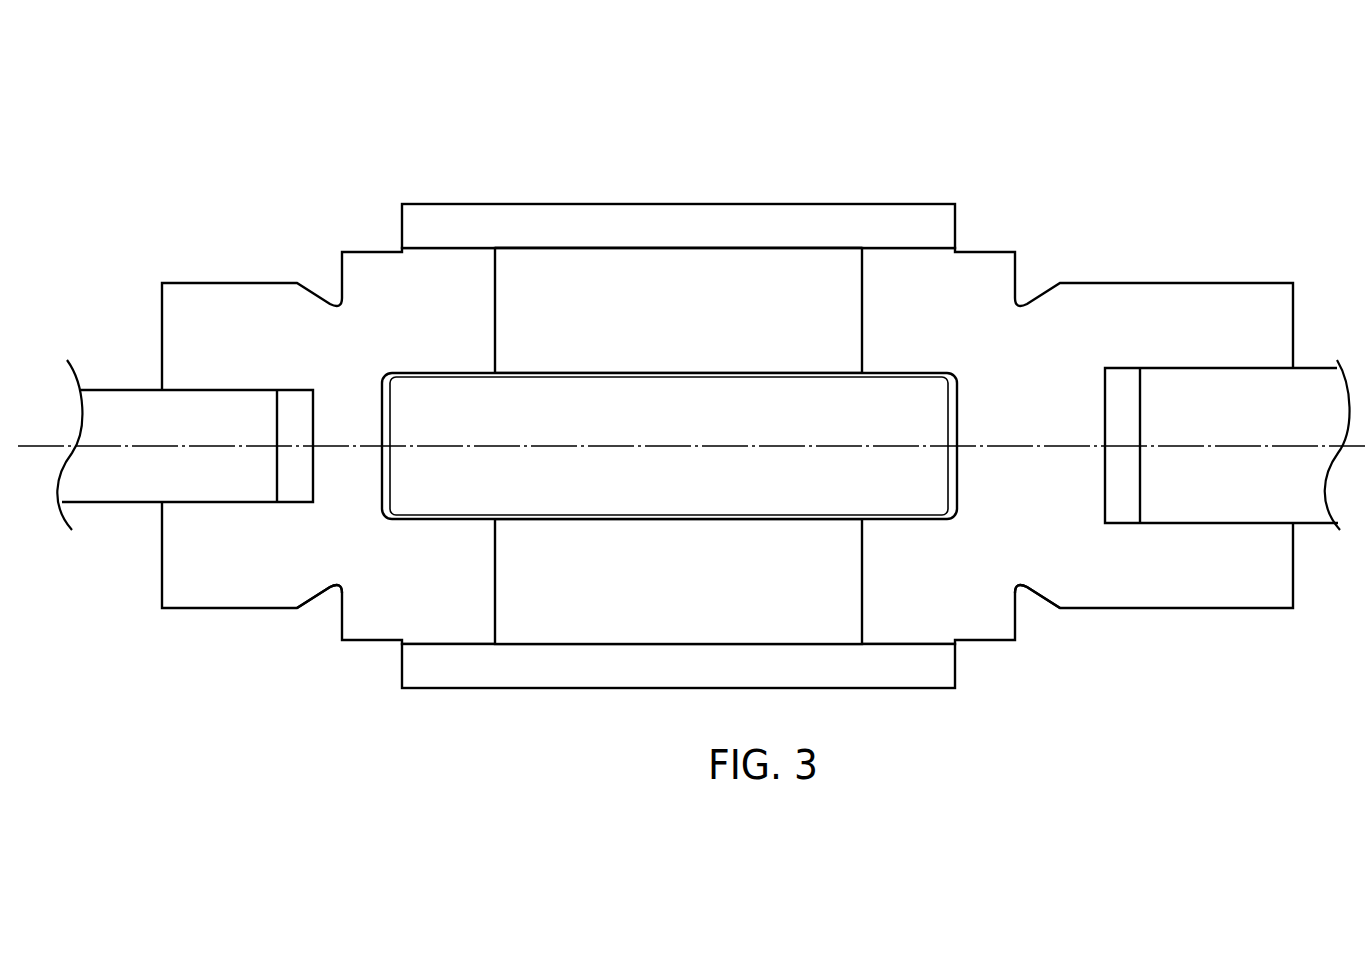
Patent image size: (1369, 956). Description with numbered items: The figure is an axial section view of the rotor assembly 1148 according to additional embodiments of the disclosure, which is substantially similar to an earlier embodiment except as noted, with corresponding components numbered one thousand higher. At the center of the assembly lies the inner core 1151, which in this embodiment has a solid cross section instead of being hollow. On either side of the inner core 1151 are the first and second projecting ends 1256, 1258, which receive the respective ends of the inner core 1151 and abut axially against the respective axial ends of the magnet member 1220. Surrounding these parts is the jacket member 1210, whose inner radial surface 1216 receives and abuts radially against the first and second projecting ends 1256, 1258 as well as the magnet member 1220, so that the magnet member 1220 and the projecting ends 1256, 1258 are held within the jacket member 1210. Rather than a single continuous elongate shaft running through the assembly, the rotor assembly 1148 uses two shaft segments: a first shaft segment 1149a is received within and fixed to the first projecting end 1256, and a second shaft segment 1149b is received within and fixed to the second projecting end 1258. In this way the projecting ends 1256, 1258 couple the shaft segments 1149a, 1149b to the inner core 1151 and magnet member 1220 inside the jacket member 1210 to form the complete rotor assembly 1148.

The rotor assembly 1148 is at (208, 170).
The first shaft segment 1149a is at (125, 398).
The second shaft segment 1149b is at (1313, 377).
The inner core 1151 is at (712, 507).
The jacket member 1210 is at (752, 222).
The inner radial surface 1216 is at (625, 250).
The magnet member 1220 is at (577, 270).
The first projecting end 1256 is at (293, 587).
The second projecting end 1258 is at (1162, 585).